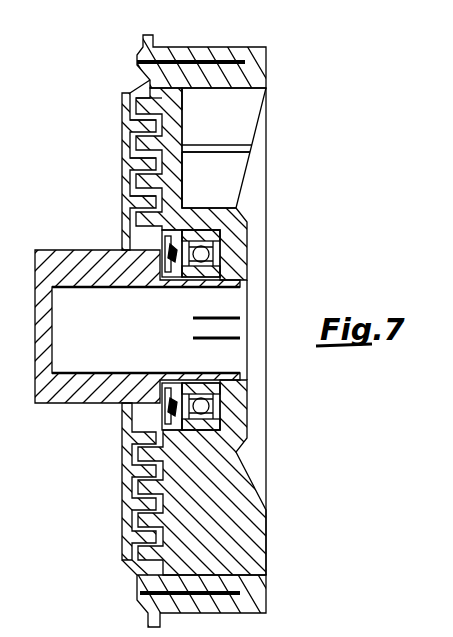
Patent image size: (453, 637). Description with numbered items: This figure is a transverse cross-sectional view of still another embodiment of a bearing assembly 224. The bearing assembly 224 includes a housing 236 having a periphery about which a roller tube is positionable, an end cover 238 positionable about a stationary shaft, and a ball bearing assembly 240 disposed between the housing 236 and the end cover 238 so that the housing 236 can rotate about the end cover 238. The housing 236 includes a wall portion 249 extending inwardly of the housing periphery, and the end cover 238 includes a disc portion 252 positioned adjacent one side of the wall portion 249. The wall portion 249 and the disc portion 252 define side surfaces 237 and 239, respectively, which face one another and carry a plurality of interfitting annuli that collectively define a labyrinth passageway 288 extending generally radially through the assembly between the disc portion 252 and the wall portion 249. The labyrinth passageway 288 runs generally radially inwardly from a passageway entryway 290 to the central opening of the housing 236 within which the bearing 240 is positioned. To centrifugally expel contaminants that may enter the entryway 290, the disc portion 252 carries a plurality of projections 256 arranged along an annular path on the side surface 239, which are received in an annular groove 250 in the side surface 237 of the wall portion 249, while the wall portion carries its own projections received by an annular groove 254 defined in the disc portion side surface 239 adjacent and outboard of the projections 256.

The bearing assembly 224 is at (274, 128).
The housing 236 is at (248, 490).
The side surface 237 is at (172, 142).
The end cover 238 is at (116, 444).
The side surface 239 is at (140, 165).
The ball bearing assembly 240 is at (224, 250).
The wall portion 249 is at (192, 155).
The annular groove 250 is at (178, 100).
The disc portion 252 is at (140, 190).
The annular groove 254 is at (130, 115).
The projections 256 is at (140, 114).
The labyrinth passageway 288 is at (166, 209).
The passageway entryway 290 is at (168, 62).